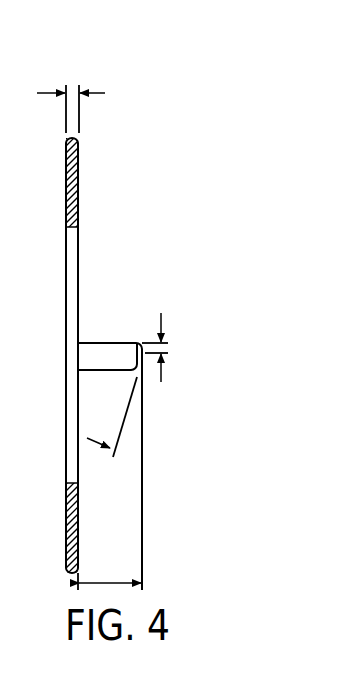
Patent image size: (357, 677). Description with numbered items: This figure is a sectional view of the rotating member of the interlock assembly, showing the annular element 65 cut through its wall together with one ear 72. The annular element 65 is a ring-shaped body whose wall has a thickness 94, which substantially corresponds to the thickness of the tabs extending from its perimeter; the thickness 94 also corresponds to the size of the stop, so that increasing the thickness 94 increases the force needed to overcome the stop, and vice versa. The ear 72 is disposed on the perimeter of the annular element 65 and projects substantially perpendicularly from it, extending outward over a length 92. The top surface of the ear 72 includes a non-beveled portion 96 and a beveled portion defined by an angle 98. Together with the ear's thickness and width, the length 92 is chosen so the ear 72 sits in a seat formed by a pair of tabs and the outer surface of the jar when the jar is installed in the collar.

The annular element 65 is at (66, 173).
The ear 72 is at (107, 352).
The length 92 is at (110, 580).
The thickness 94 is at (94, 93).
The non-beveled portion 96 is at (162, 321).
The angle 98 is at (144, 452).